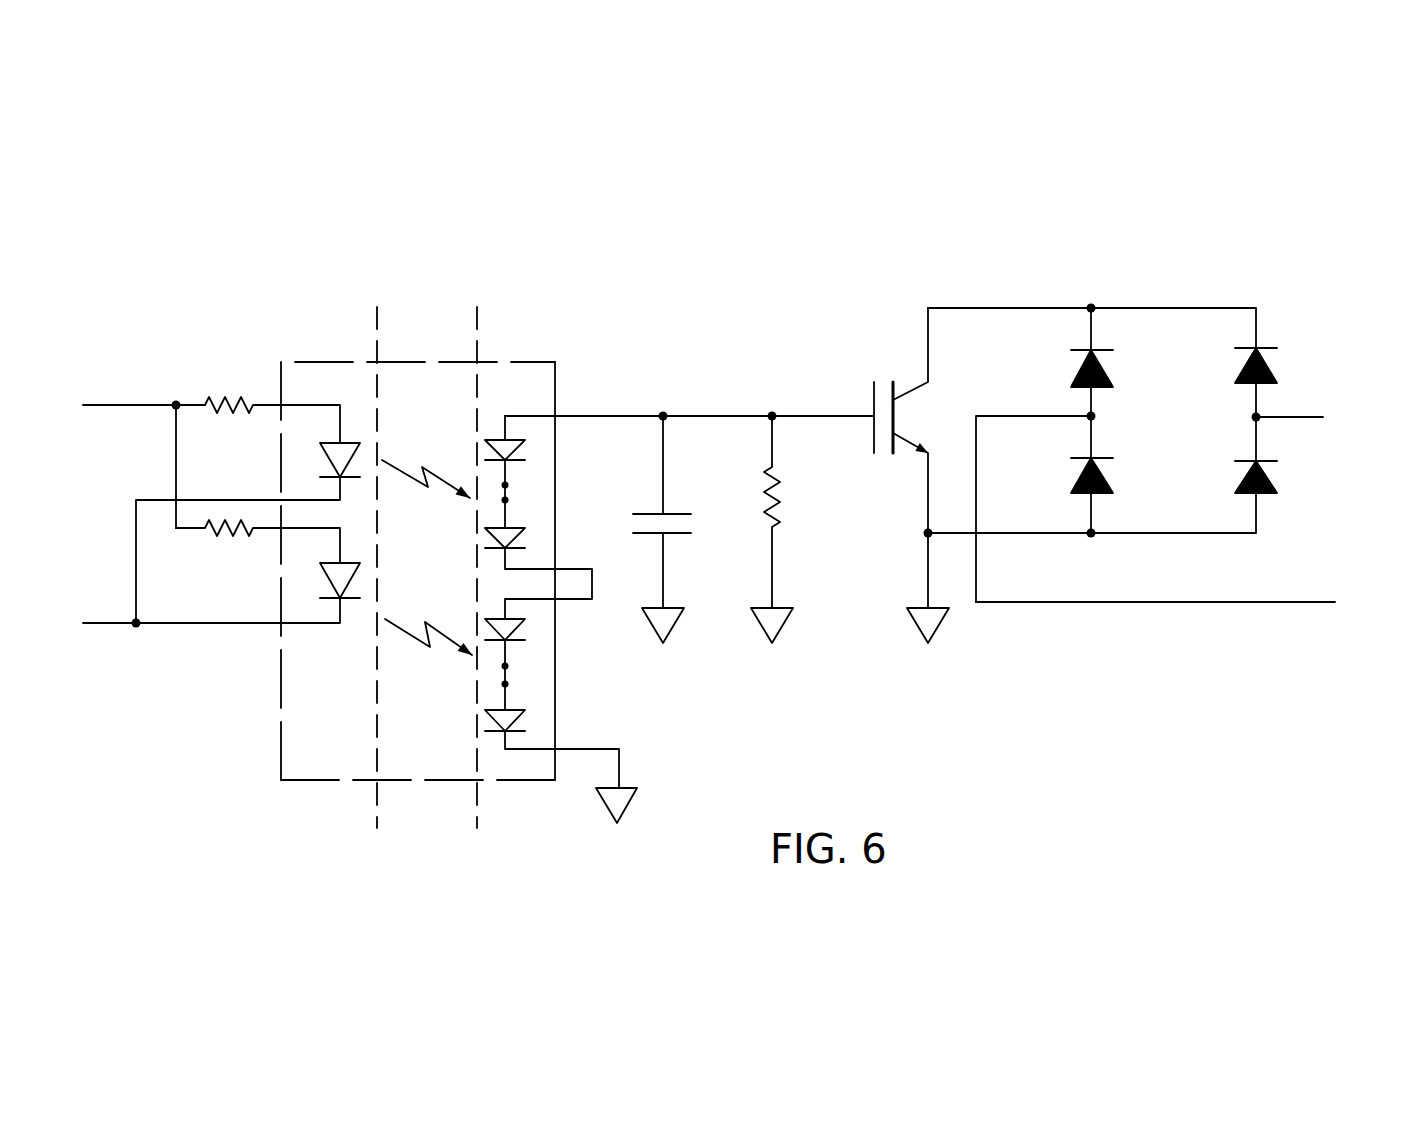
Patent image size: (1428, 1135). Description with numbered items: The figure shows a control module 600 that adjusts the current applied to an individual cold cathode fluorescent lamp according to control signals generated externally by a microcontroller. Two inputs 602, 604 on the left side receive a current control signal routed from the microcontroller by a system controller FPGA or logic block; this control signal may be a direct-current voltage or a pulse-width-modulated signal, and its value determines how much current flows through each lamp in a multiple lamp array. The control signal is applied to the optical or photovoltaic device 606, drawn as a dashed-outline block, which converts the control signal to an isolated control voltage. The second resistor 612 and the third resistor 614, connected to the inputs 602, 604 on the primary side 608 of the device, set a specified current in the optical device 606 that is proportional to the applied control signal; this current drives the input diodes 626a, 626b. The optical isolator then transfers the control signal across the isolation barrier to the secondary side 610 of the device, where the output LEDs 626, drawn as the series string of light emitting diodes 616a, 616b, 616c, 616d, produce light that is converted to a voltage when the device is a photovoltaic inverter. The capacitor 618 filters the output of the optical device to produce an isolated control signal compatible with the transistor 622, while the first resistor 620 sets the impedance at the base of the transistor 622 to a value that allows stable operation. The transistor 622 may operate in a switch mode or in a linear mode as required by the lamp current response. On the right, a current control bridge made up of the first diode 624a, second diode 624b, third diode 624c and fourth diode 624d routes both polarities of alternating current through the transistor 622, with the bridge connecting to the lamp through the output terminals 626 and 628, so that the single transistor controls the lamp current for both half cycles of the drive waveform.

The control module 600 is at (758, 262).
The input 602 is at (87, 407).
The input 604 is at (87, 625).
The optical or photovoltaic device U1 606 is at (452, 362).
The input side of optocoupler 608 is at (327, 387).
The secondary side of U1 610 is at (520, 385).
The resistor R2 612 is at (259, 413).
The resistor R3 614 is at (217, 530).
The light emitting diode 616a is at (523, 461).
The light emitting diode 616b is at (523, 543).
The light emitting diode 616c is at (523, 642).
The light emitting diode 616d is at (523, 730).
The capacitor C1 618 is at (677, 536).
The resistor R1 620 is at (775, 518).
The transistor Q1 622 is at (914, 393).
The diode D1 624a is at (1113, 378).
The diode D2 624b is at (1113, 484).
The diode D3 624c is at (1270, 364).
The diode D4 624d is at (1277, 489).
The output LEDs 626 is at (1317, 417).
The optocoupler input diode 626a is at (352, 442).
The optocoupler input diode 626b is at (352, 562).
The output terminal 4 628 is at (1334, 603).